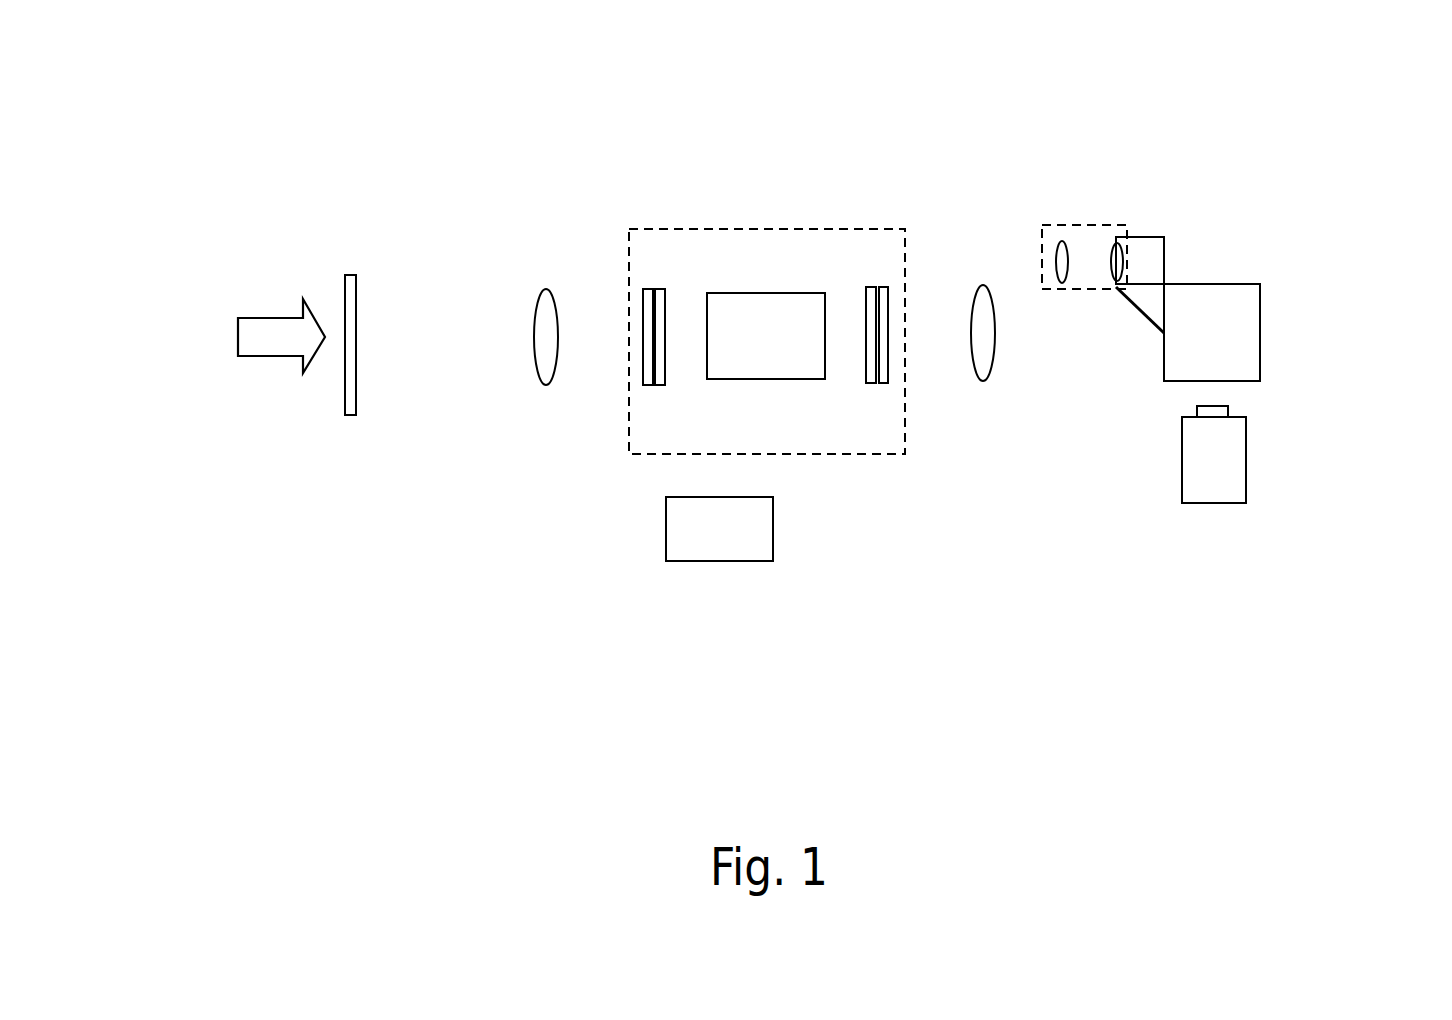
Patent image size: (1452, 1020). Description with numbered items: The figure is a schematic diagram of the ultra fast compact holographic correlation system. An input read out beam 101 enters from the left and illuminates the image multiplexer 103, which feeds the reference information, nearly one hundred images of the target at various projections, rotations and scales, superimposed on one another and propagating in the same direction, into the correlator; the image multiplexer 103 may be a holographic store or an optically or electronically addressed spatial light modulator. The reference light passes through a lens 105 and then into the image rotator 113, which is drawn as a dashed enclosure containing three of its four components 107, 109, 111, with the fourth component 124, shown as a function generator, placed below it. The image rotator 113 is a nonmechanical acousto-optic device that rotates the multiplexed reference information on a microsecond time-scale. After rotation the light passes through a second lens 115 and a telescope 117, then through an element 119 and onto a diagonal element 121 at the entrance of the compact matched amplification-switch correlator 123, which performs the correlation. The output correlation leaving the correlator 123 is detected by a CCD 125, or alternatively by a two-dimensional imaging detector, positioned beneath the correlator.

The input read out beam 101 is at (302, 300).
The image multiplexer 103 is at (353, 415).
The lens 105 is at (545, 288).
The image rotator component 107 is at (653, 289).
The image rotator component 109 is at (759, 293).
The image rotator component 111 is at (877, 287).
The image rotator 113 is at (877, 454).
The lens 115 is at (982, 285).
The telescope 117 is at (1093, 258).
The telescope output element 119 is at (1142, 242).
The beam splitter mirror 121 is at (1147, 305).
The compact matched amplification-switch correlator 123 is at (1260, 363).
The image rotator component 124 is at (715, 561).
The CCD 125 is at (1218, 503).